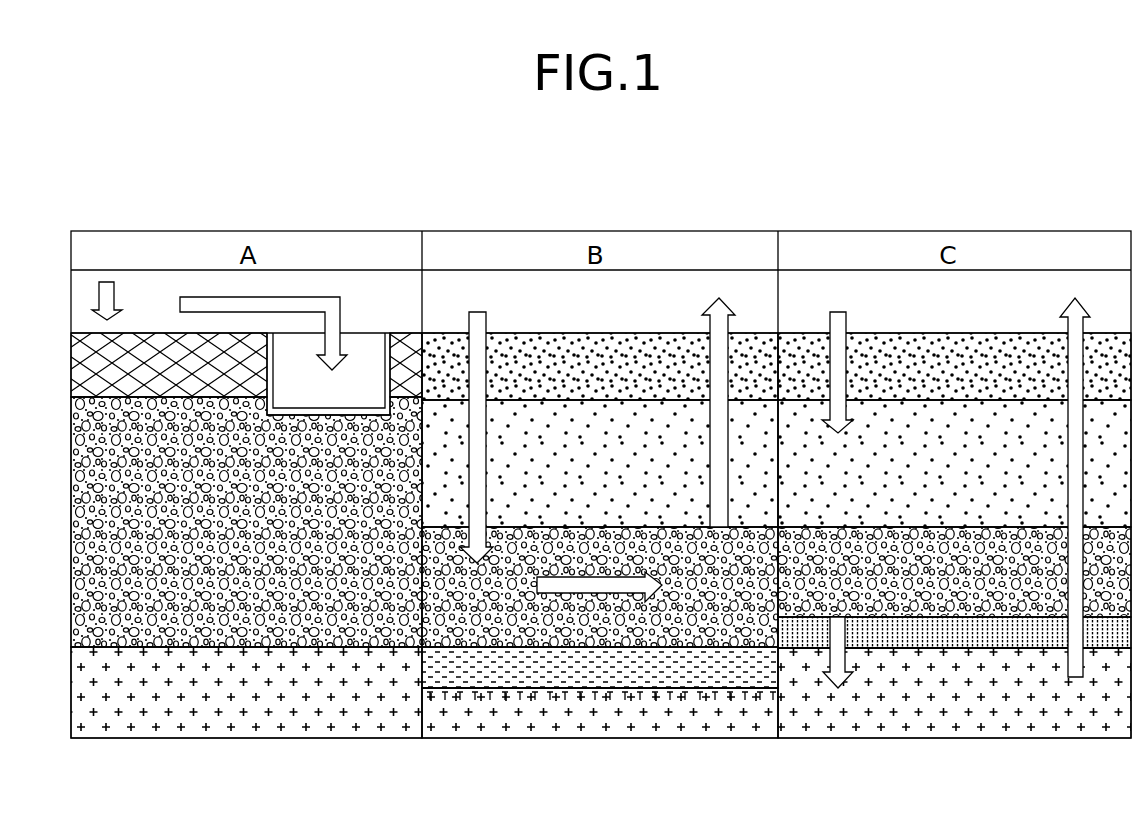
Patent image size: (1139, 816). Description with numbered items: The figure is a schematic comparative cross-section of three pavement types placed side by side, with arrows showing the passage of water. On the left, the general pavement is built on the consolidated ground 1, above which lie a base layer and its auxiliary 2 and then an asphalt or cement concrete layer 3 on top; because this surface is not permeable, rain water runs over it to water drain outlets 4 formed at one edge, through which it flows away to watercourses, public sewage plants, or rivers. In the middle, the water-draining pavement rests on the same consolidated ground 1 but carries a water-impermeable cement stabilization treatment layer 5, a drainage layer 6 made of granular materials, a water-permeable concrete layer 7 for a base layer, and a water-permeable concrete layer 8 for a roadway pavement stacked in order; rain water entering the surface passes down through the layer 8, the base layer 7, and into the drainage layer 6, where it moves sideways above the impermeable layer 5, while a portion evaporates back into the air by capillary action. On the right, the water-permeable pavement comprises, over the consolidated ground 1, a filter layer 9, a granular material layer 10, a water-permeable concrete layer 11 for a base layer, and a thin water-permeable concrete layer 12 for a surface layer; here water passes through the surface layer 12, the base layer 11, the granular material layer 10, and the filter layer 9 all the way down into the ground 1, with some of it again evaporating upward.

The consolidated ground 1 is at (601, 692).
The base layer and its auxiliary 2 is at (246, 522).
The asphalt or cement concrete layer 3 is at (246, 365).
The water drain outlets 4 is at (328, 374).
The water-impermeable cement stabilization treatment layer 5 is at (600, 667).
The drainage layer made of granular materials 6 is at (600, 587).
The water-permeable concrete layer for a base layer 7 is at (600, 463).
The water-permeable concrete layer for a roadway pavement 8 is at (600, 366).
The filter layer 9 is at (954, 633).
The granular material layer 10 is at (954, 572).
The water-permeable concrete layer for a base layer 11 is at (954, 463).
The thin water-permeable concrete layer for a surface layer 12 is at (954, 366).